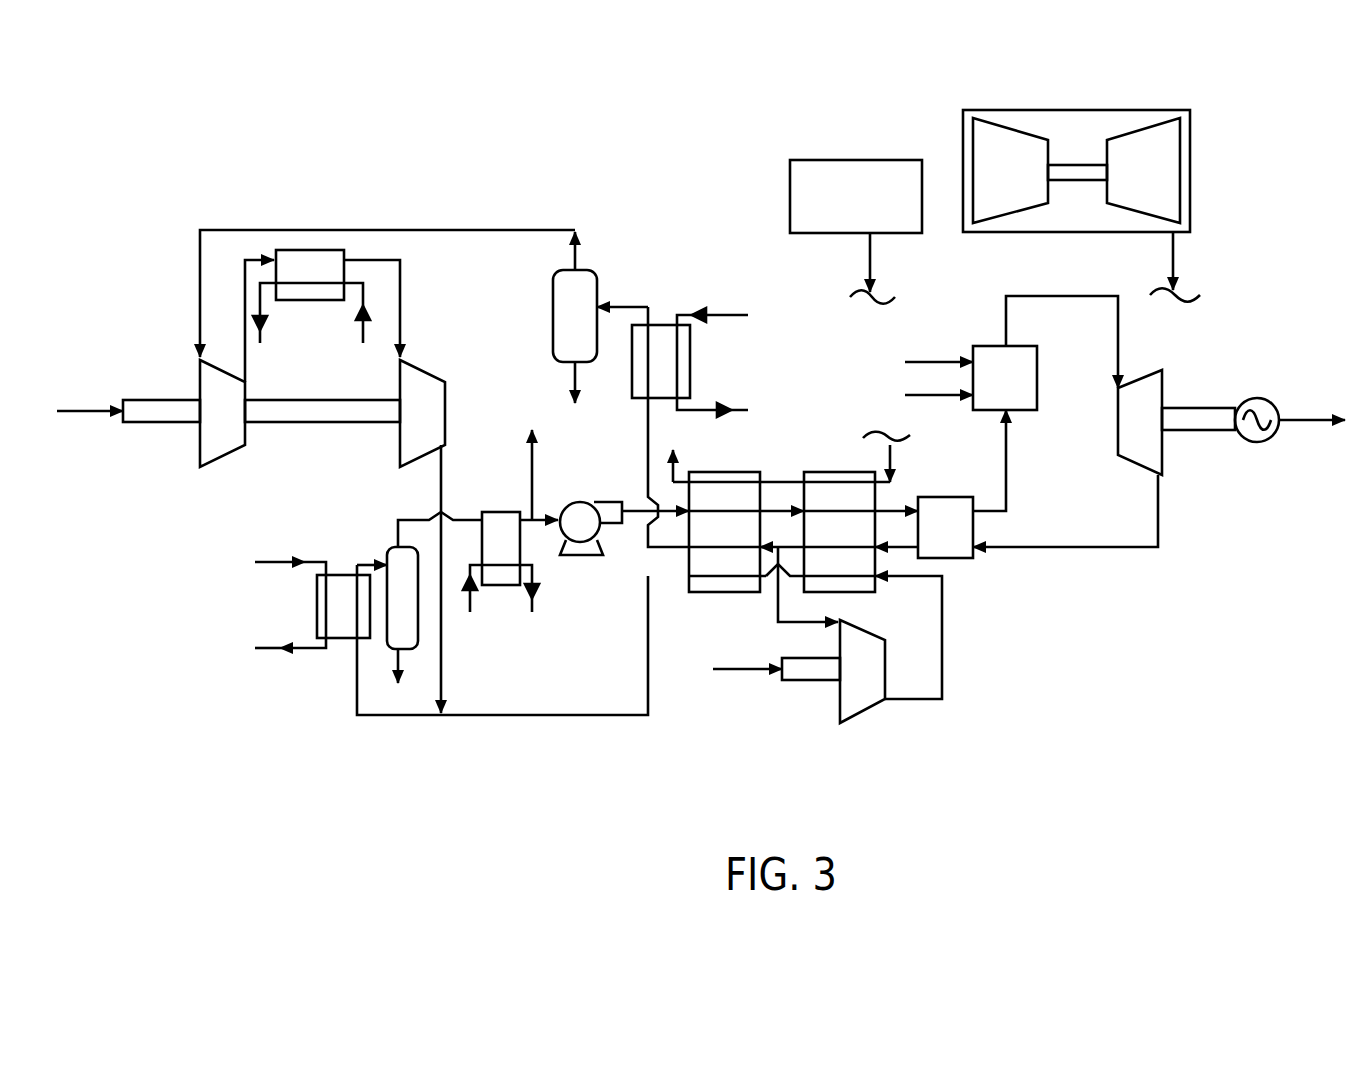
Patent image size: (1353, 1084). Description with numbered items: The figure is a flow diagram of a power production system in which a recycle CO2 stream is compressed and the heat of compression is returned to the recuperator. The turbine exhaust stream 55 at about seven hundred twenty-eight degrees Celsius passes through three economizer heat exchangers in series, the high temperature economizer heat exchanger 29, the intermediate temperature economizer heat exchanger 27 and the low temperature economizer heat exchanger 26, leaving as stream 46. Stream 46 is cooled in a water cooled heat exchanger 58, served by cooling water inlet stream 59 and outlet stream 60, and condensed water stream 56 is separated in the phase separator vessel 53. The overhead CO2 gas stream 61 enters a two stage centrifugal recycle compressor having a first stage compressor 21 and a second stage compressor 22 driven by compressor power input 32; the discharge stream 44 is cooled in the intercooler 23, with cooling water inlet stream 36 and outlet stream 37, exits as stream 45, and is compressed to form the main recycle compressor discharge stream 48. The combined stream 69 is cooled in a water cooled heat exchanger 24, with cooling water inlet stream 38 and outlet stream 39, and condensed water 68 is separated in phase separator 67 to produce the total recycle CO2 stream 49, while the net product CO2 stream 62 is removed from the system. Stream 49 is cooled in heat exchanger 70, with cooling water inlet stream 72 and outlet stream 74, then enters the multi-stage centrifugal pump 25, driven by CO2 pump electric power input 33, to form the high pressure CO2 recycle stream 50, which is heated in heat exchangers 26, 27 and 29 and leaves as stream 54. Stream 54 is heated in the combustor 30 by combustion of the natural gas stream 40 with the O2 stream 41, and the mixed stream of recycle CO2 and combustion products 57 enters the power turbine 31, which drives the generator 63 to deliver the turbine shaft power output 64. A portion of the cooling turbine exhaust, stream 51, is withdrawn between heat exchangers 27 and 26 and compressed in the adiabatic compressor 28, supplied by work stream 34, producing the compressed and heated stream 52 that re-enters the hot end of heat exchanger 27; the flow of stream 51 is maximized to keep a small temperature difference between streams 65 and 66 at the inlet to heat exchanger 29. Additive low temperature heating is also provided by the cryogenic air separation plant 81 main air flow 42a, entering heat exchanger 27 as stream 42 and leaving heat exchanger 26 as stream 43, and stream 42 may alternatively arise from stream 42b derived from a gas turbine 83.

The first stage compressor 21 is at (222, 413).
The second stage compressor 22 is at (422, 413).
The intercooler 23 is at (310, 275).
The water cooled heat exchanger 24 is at (343, 606).
The multi-stage centrifugal pump 25 is at (591, 528).
The low temperature economizer heat exchanger 26 is at (727, 532).
The intermediate temperature economizer heat exchanger 27 is at (817, 532).
The adiabatic compressor 28 is at (862, 671).
The high temperature economizer heat exchanger 29 is at (945, 527).
The combustor 30 is at (1005, 378).
The power turbine 31 is at (1140, 422).
The compressor power input 32 is at (128, 406).
The CO2 pump electric power input 33 is at (558, 465).
The work stream 34 is at (776, 663).
The cooling water inlet stream 36 is at (341, 313).
The cooling water outlet stream 37 is at (282, 313).
The cooling water inlet stream 38 is at (290, 572).
The cooling water outlet stream 39 is at (290, 637).
The natural gas stream 40 is at (939, 351).
The O2 stream 41 is at (939, 405).
The air stream 42 is at (728, 572).
The main air flow 42a is at (880, 268).
The gas turbine heat stream 42b is at (1182, 267).
The air outlet stream 43 is at (781, 463).
The discharge stream 44 is at (245, 321).
The intercooled stream 45 is at (386, 308).
The cooled turbine exhaust stream 46 is at (643, 427).
The main recycle compressor discharge stream 48 is at (455, 579).
The total recycle CO2 stream 49 is at (478, 524).
The high pressure CO2 recycle stream 50 is at (655, 524).
The withdrawn turbine exhaust portion 51 is at (796, 585).
The compressed and heated stream 52 is at (869, 631).
The phase separator vessel 53 is at (575, 316).
The heated recycle stream 54 is at (1003, 460).
The turbine exhaust stream 55 is at (1065, 511).
The condensed water stream 56 is at (589, 382).
The mixed stream of recycle CO2 and combustion products 57 is at (1075, 342).
The water cooled heat exchanger 58 is at (661, 361).
The cooling water inlet stream 59 is at (712, 326).
The cooling water outlet stream 60 is at (713, 389).
The overhead CO2 gas stream 61 is at (387, 283).
The net product CO2 stream 62 is at (531, 463).
The generator 63 is at (1257, 408).
The turbine shaft power output 64 is at (1312, 430).
The stream at inlet to high temperature economizer 65 is at (896, 499).
The stream at inlet to high temperature economizer 66 is at (839, 536).
The phase separator 67 is at (402, 598).
The condensed water 68 is at (387, 666).
The combined stream 69 is at (502, 652).
The heat exchanger 70 is at (501, 548).
The cooling water inlet stream 72 is at (482, 589).
The cooling water outlet stream 74 is at (530, 589).
The cryogenic air separation plant 81 is at (856, 196).
The gas turbine 83 is at (1076, 171).